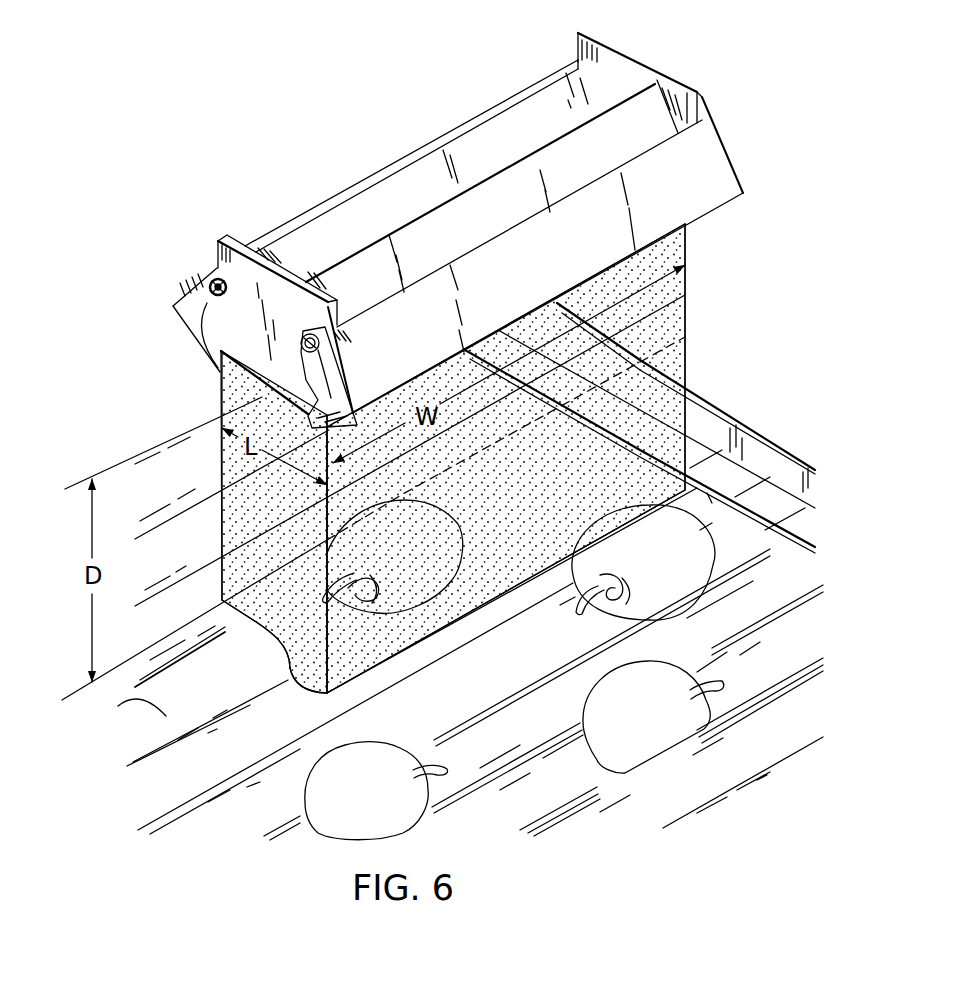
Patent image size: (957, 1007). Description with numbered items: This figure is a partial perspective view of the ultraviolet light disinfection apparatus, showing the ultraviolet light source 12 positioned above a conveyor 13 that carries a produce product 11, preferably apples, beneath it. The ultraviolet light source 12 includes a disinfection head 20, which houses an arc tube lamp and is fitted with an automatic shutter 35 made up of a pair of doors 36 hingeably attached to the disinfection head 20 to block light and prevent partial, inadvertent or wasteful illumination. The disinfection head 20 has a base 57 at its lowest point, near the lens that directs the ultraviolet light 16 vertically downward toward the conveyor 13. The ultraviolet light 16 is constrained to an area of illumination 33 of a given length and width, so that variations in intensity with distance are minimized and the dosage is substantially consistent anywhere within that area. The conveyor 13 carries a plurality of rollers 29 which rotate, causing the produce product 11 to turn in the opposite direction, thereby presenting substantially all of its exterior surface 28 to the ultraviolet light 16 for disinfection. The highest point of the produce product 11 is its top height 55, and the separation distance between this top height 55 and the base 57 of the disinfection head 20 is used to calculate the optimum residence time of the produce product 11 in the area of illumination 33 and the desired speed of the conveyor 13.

The ultraviolet light source 12 is at (467, 230).
The disinfection head 20 is at (617, 78).
The doors 36 is at (196, 300).
The automatic shutter 35 is at (716, 170).
The ultraviolet light 16 is at (488, 458).
The base 57 is at (281, 324).
The top height 55 is at (393, 512).
The produce product 11 is at (443, 547).
The exterior surface 28 is at (411, 556).
The area of illumination 33 is at (466, 592).
The conveyor 13 is at (489, 567).
The rollers 29 is at (167, 714).